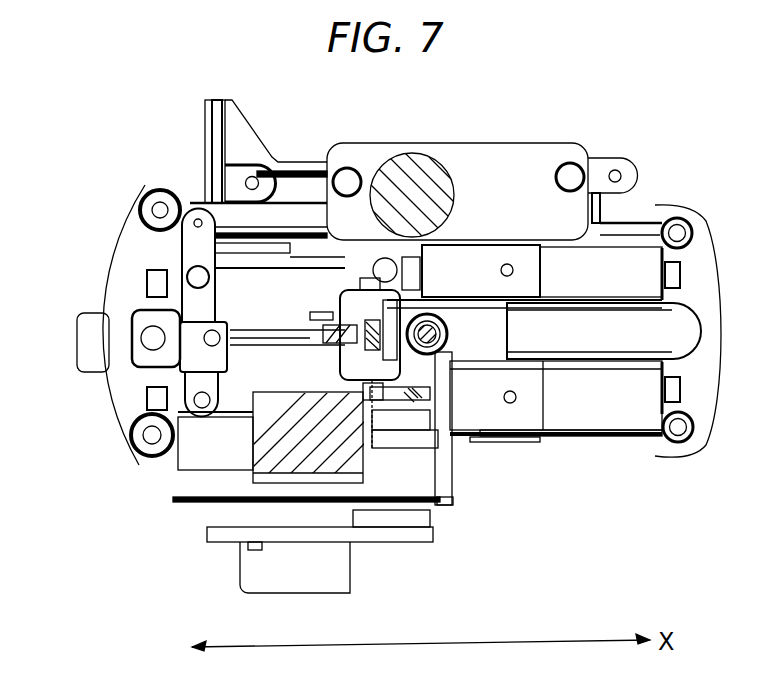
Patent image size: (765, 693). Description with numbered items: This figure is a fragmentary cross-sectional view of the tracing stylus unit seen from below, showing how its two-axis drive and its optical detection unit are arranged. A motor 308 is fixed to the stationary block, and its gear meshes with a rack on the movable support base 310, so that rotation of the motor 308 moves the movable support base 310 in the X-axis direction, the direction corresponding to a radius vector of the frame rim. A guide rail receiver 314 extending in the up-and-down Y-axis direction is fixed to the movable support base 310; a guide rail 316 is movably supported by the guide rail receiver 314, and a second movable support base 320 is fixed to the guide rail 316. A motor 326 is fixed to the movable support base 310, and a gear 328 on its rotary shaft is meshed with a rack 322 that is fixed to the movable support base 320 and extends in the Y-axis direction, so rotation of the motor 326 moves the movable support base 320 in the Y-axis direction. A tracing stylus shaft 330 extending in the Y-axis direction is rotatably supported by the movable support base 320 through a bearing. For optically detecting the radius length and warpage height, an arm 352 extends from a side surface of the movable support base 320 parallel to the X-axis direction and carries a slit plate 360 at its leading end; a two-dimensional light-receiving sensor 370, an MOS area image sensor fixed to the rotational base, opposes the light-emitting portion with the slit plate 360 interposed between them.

The motor 308 is at (430, 165).
The movable support base 310 is at (335, 297).
The guide rail receiver 314 is at (345, 300).
The guide rail 316 is at (423, 305).
The movable support base 320 is at (440, 318).
The rack 322 is at (428, 410).
The motor 326 is at (262, 442).
The gear 328 is at (400, 440).
The tracing stylus shaft 330 is at (447, 343).
The arm 352 is at (442, 407).
The slit plate 360 is at (190, 505).
The two-dimensional light-receiving sensor 370 is at (397, 518).